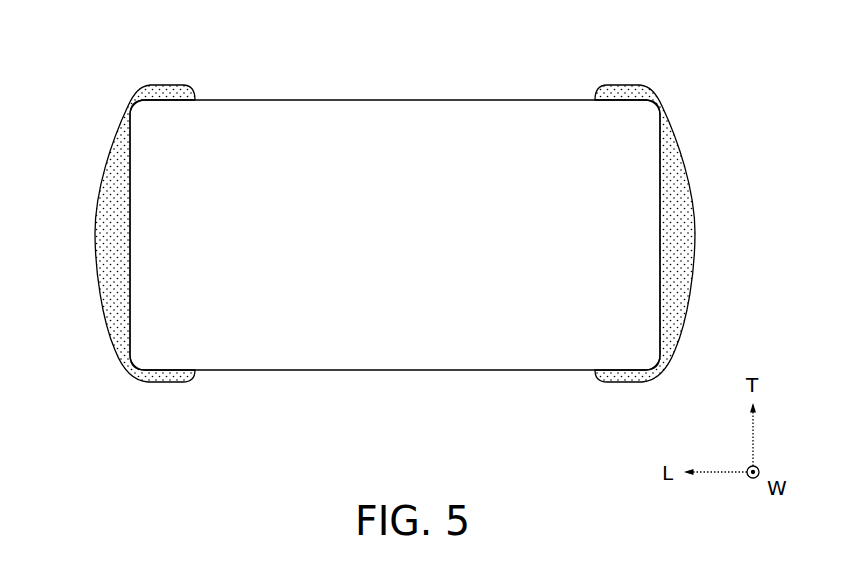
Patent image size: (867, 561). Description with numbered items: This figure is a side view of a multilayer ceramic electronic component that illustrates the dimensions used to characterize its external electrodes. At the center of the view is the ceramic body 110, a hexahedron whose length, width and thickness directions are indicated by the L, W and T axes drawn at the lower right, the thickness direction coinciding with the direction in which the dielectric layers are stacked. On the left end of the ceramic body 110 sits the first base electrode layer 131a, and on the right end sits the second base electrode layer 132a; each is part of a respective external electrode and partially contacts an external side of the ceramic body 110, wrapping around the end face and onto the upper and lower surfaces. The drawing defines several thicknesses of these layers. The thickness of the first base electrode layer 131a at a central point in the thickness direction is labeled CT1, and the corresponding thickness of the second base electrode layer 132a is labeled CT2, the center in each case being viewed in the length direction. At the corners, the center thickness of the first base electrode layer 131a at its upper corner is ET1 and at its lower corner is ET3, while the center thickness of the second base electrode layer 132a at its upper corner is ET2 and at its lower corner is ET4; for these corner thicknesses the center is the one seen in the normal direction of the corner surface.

The ceramic body 110 is at (492, 100).
The first base electrode layer 131a is at (170, 85).
The second base electrode layer 132a is at (620, 85).
The center thickness of first base electrode layer at upper corner ET1 is at (146, 115).
The center thickness of second base electrode layer at upper corner ET2 is at (644, 115).
The center thickness of first base electrode layer at lower corner ET3 is at (146, 355).
The center thickness of second base electrode layer at lower corner ET4 is at (644, 355).
The thickness of first base electrode layer at central point in thickness direction CT1 is at (146, 235).
The thickness of second base electrode layer at central point in thickness direction CT2 is at (644, 235).